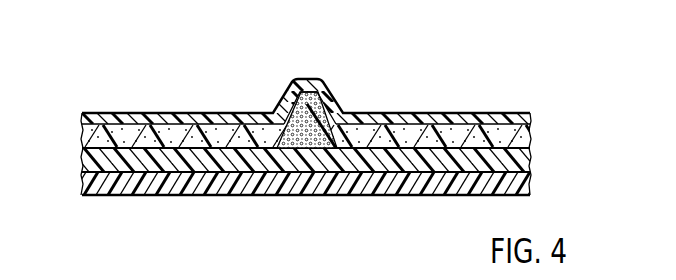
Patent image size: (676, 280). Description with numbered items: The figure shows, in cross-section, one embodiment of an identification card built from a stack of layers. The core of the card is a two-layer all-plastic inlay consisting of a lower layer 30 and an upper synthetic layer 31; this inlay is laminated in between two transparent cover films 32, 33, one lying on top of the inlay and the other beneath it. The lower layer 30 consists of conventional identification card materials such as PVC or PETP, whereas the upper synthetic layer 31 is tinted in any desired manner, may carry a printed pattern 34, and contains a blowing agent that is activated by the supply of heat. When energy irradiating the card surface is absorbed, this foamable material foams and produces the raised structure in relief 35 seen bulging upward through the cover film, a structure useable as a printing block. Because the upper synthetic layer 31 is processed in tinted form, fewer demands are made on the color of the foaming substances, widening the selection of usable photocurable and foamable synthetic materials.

The lower layer of the all-plastic inlay 30 is at (85, 162).
The upper synthetic layer 31 is at (83, 133).
The transparent cover film 32 is at (101, 120).
The transparent cover film 33 is at (86, 186).
The printed pattern 34 is at (162, 122).
The structure in relief 35 is at (328, 92).